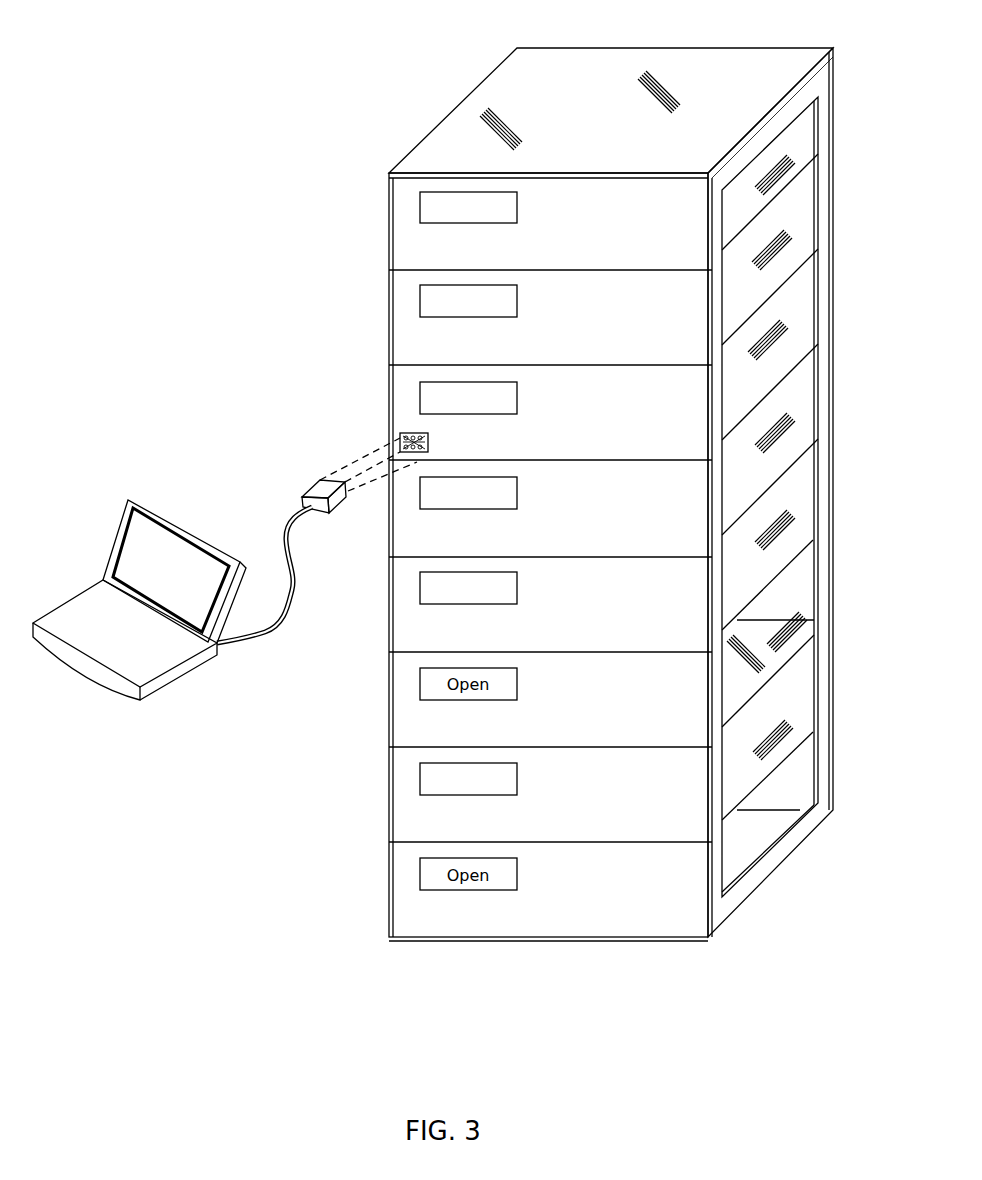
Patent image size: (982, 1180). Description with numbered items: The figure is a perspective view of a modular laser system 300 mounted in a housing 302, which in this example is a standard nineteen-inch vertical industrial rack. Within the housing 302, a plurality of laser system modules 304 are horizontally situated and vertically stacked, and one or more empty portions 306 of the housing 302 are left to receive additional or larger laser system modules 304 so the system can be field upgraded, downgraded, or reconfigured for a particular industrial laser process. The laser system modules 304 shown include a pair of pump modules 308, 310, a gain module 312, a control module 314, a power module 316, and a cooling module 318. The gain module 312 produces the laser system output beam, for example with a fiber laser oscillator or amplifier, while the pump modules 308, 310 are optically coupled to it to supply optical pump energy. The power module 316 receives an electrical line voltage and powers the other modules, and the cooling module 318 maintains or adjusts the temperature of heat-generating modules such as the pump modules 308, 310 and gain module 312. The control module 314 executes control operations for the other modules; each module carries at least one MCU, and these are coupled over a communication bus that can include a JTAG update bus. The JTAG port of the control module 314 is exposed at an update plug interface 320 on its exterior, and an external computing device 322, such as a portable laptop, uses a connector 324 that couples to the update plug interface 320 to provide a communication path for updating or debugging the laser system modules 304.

The modular laser system 300 is at (180, 62).
The housing 302 is at (512, 80).
The laser system modules 304 is at (402, 405).
The empty portions 306 is at (797, 588).
The pump module 308 is at (518, 594).
The pump module 310 is at (518, 502).
The gain module 312 is at (518, 783).
The control module 314 is at (518, 407).
The power module 316 is at (518, 308).
The cooling module 318 is at (518, 216).
The update plug interface 320 is at (400, 433).
The external computing device 322 is at (63, 603).
The connector 324 is at (313, 495).